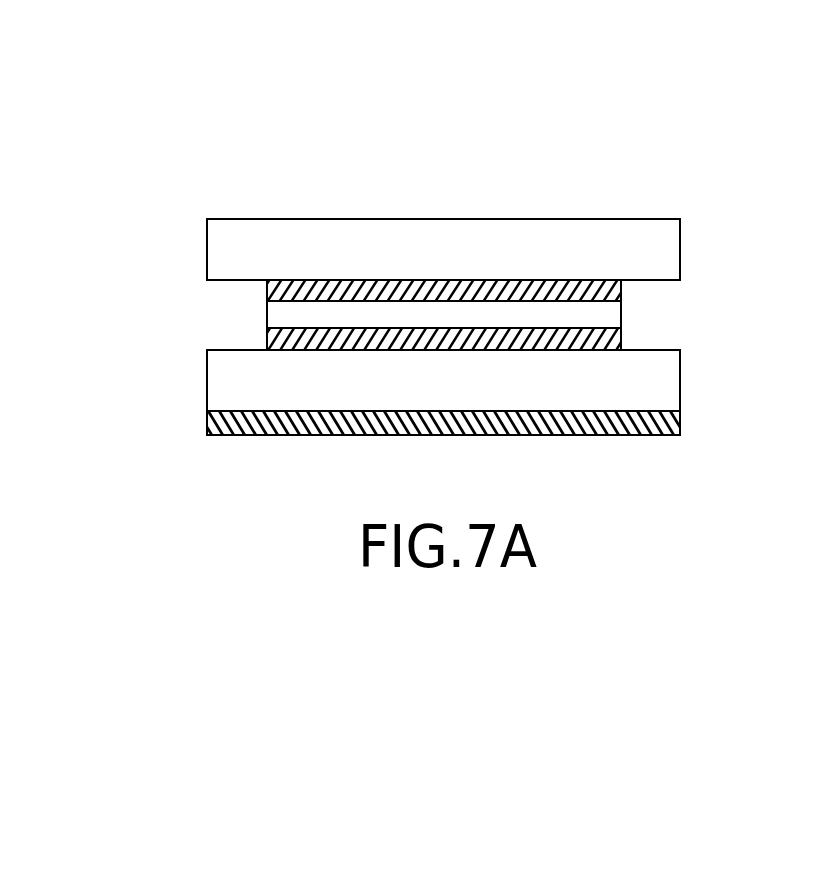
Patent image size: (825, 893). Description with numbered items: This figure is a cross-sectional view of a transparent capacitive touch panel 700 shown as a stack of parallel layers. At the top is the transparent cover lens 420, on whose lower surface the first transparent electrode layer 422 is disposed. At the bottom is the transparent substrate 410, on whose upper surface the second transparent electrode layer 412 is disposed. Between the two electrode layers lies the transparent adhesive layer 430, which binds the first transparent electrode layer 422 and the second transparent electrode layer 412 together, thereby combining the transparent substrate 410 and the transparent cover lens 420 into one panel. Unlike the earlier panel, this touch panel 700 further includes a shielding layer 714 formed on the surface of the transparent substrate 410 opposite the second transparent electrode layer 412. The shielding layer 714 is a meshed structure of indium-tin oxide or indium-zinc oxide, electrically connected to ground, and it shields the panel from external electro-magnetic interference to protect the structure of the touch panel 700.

The transparent capacitive touch panel 700 is at (697, 545).
The transparent cover lens 420 is at (657, 237).
The first transparent electrode layer 422 is at (621, 280).
The transparent adhesive layer 430 is at (267, 318).
The second transparent electrode layer 412 is at (621, 330).
The transparent substrate 410 is at (657, 390).
The shielding layer 714 is at (680, 423).